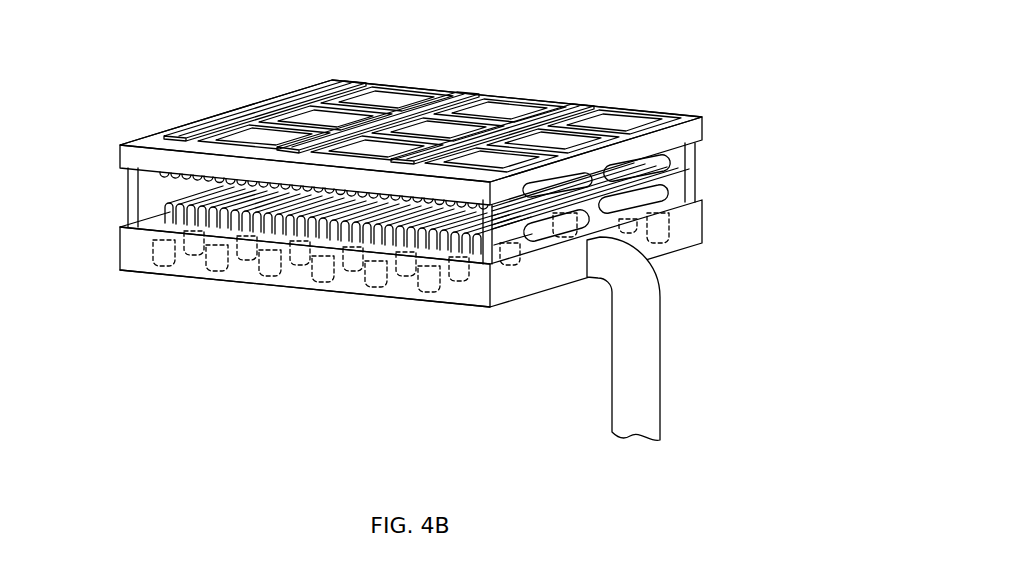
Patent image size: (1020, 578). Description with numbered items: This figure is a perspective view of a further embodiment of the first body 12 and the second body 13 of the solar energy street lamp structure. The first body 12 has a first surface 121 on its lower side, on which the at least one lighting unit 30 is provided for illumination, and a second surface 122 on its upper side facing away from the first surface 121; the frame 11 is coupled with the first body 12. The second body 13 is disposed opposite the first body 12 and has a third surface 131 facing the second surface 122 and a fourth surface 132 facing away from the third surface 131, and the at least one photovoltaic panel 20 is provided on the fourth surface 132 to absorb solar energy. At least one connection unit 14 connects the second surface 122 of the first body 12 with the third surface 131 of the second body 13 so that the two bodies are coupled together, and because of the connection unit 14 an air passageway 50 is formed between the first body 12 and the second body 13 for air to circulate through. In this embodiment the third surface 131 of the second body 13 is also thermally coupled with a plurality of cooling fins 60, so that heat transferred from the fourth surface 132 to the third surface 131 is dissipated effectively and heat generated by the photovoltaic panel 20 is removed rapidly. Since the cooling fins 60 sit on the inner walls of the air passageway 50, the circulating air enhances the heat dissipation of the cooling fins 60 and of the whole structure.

The frame 11 is at (648, 358).
The first body 12 is at (693, 232).
The first surface 121 is at (190, 280).
The second surface 122 is at (147, 226).
The second body 13 is at (698, 132).
The third surface 131 is at (128, 173).
The fourth surface 132 is at (150, 140).
The connection unit 14 is at (690, 177).
The photovoltaic panel 20 is at (482, 105).
The lighting unit 30 is at (318, 280).
The air passageway 50 is at (133, 189).
The cooling fins 60 is at (436, 240).